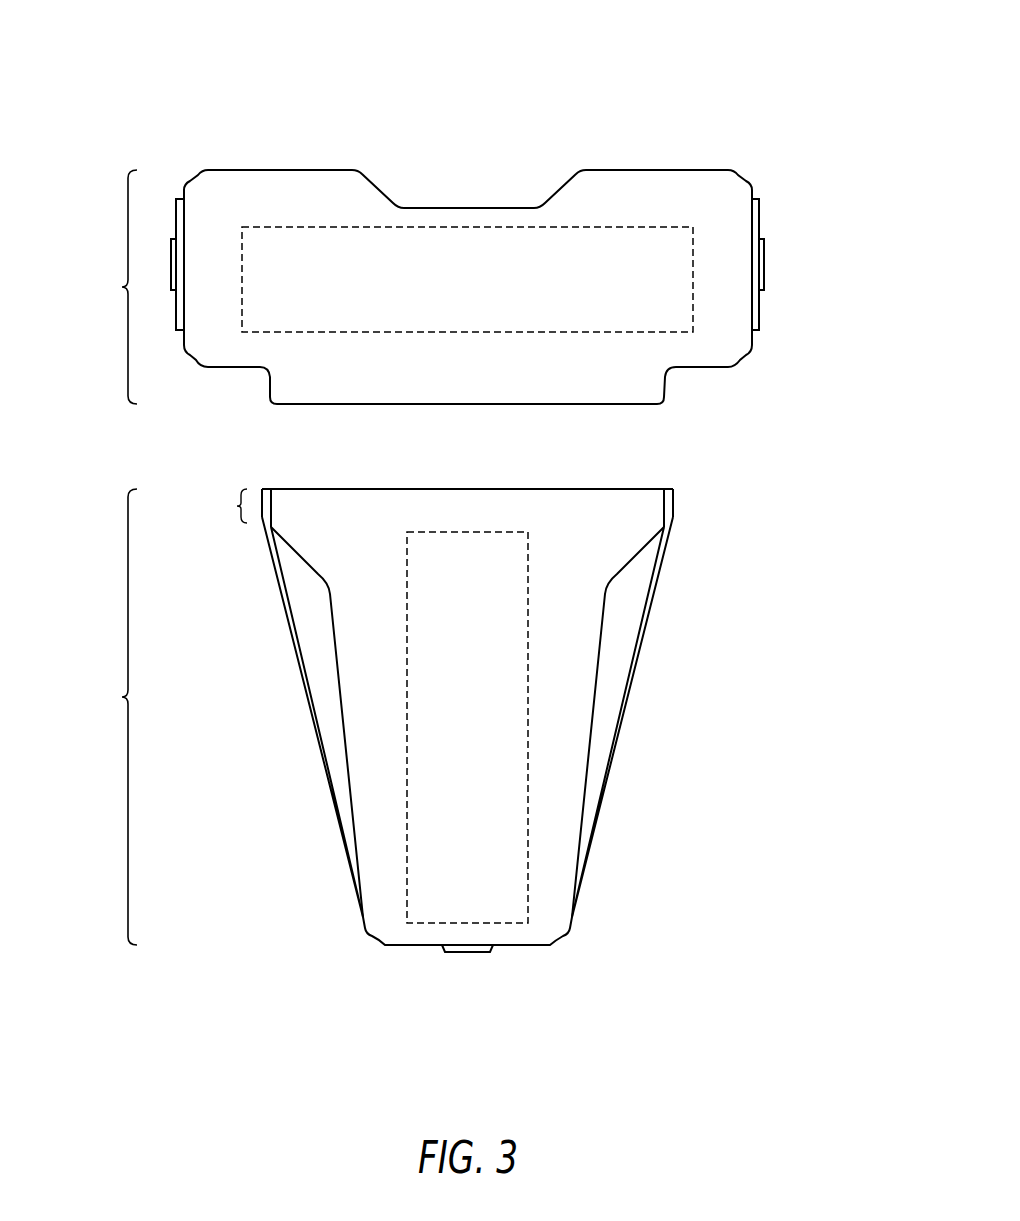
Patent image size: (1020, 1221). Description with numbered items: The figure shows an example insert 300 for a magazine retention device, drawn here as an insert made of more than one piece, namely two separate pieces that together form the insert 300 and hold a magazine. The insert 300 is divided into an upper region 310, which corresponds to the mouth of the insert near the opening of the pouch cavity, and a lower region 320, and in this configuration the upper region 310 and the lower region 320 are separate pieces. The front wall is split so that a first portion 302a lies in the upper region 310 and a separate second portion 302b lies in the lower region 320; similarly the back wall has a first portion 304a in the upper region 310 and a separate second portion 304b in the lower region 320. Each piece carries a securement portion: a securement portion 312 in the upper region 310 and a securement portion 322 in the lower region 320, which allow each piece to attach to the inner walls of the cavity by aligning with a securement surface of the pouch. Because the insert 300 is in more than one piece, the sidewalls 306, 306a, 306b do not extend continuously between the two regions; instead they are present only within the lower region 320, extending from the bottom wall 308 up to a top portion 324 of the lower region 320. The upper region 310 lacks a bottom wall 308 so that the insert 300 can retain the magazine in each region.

The insert 300 is at (706, 62).
The first portion of front wall 302a is at (225, 341).
The second portion of front wall 302b is at (360, 513).
The first portion of back wall 304a is at (268, 166).
The second portion of back wall 304b is at (612, 486).
The sidewalls 306 is at (476, 717).
The first sidewall 306a is at (322, 752).
The second sidewall 306b is at (635, 668).
The bottom wall 308 is at (525, 947).
The upper region 310 is at (108, 287).
The securement portion 312 is at (642, 227).
The lower region 320 is at (108, 717).
The securement portion 322 is at (480, 532).
The top portion of lower region 324 is at (435, 508).